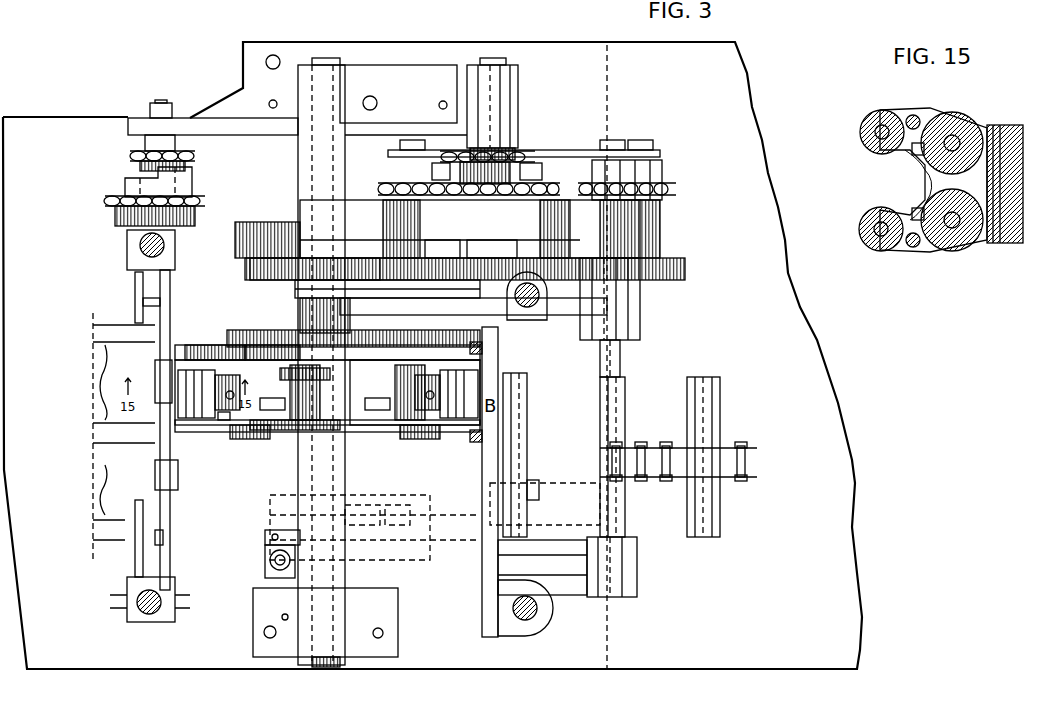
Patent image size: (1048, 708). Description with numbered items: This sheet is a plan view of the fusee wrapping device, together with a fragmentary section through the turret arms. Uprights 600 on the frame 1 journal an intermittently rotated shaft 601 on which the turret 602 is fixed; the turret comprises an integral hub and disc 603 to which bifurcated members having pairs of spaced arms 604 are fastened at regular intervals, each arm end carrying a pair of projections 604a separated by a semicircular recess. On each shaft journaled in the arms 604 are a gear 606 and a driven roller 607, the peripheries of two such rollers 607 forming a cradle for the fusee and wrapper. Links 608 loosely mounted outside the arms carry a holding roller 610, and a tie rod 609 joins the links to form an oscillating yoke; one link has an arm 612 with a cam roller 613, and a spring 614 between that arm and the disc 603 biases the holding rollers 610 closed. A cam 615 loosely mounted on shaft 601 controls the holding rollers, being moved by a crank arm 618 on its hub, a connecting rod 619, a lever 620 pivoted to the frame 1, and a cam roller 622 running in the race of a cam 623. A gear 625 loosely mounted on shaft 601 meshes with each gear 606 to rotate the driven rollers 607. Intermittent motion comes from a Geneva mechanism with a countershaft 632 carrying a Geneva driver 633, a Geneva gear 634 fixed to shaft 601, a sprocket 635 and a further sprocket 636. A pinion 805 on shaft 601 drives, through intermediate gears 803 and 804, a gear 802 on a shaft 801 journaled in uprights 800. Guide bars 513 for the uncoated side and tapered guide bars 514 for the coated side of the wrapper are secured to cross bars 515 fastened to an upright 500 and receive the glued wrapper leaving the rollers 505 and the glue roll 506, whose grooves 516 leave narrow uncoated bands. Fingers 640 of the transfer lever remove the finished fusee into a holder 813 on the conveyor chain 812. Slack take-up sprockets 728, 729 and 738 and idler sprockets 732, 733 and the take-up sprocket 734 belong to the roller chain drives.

In FIG. 3, the frame 1 is at (187, 670).
In FIG. 3, the upright 500 is at (140, 247).
In FIG. 3, the roller 505 is at (155, 376).
In FIG. 3, the glue roll 506 is at (93, 458).
In FIG. 3, the guide bar 513 is at (152, 338).
In FIG. 3, the guide bar 514 is at (135, 540).
In FIG. 3, the cross bar 515 is at (135, 292).
In FIG. 3, the groove 516 is at (117, 430).
In FIG. 3, the upright 600 is at (392, 95).
In FIG. 3, the shaft 601 is at (330, 58).
In FIG. 3, the turret 602 is at (432, 428).
In FIG. 3, the hub and disc 603 is at (292, 368).
In FIG. 3, the arm 604 is at (415, 370).
In FIG. 15, the arm 604 is at (988, 243).
In FIG. 15, the projection 604a is at (920, 178).
In FIG. 3, the gear 606 is at (255, 350).
In FIG. 3, the driven roller 607 is at (228, 412).
In FIG. 15, the driven roller 607 is at (966, 118).
In FIG. 3, the link 608 is at (195, 352).
In FIG. 15, the link 608 is at (897, 110).
In FIG. 3, the tie rod 609 is at (232, 400).
In FIG. 15, the tie rod 609 is at (913, 115).
In FIG. 3, the holding roller 610 is at (195, 420).
In FIG. 15, the holding roller 610 is at (860, 130).
In FIG. 3, the arm 612 is at (225, 420).
In FIG. 3, the cam roller 613 is at (255, 430).
In FIG. 3, the spring 614 is at (275, 392).
In FIG. 3, the cam 615 is at (270, 432).
In FIG. 3, the crank arm 618 is at (265, 537).
In FIG. 3, the connecting rod 619 is at (265, 565).
In FIG. 3, the lever 620 is at (450, 542).
In FIG. 3, the cam roller 622 is at (405, 528).
In FIG. 3, the cam 623 is at (443, 497).
In FIG. 3, the gear 625 is at (265, 332).
In FIG. 3, the countershaft 632 is at (484, 65).
In FIG. 3, the Geneva driver 633 is at (392, 218).
In FIG. 3, the Geneva gear 634 is at (285, 225).
In FIG. 3, the sprocket 635 is at (549, 183).
In FIG. 3, the sprocket 636 is at (528, 152).
In FIG. 3, the finger 640 is at (484, 348).
In FIG. 3, the slack take-up sprocket 728 is at (210, 192).
In FIG. 3, the slack take-up sprocket 729 is at (108, 200).
In FIG. 3, the idler sprocket 732 is at (676, 190).
In FIG. 3, the idler sprocket 733 is at (600, 196).
In FIG. 3, the slack take-up sprocket 734 is at (395, 156).
In FIG. 3, the sprocket 738 is at (130, 156).
In FIG. 3, the upright 800 is at (641, 310).
In FIG. 3, the shaft 801 is at (622, 360).
In FIG. 3, the gear 802 is at (686, 269).
In FIG. 3, the intermediate gear 803 is at (501, 258).
In FIG. 3, the intermediate gear 804 is at (437, 258).
In FIG. 3, the pinion 805 is at (250, 268).
In FIG. 3, the conveyor chain 812 is at (760, 478).
In FIG. 3, the fusee holder 813 is at (528, 392).